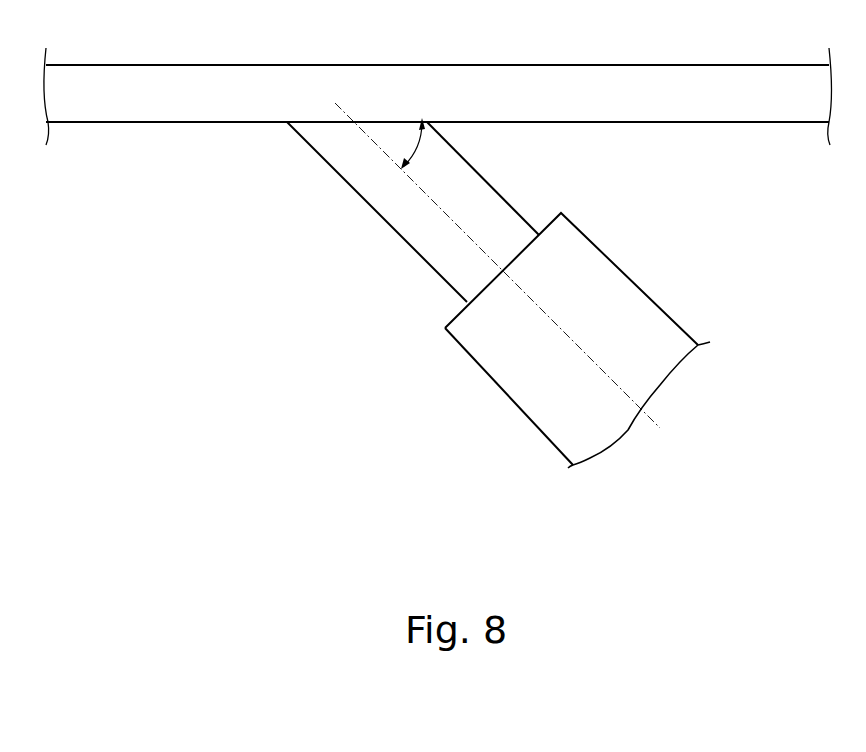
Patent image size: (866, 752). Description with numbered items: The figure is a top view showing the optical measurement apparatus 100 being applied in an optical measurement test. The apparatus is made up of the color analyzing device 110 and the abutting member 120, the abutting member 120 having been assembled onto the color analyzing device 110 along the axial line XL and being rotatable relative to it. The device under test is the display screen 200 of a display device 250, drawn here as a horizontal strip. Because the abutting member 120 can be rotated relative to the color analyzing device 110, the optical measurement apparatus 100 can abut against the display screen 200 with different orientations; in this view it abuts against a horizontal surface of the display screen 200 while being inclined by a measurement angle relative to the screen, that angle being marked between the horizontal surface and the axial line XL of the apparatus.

The optical measurement apparatus 100 is at (463, 295).
The color analyzing device 110 is at (467, 327).
The abutting member 120 is at (400, 224).
The display screen 200 is at (660, 123).
The display device 250 is at (635, 75).
The axial line XL is at (646, 417).